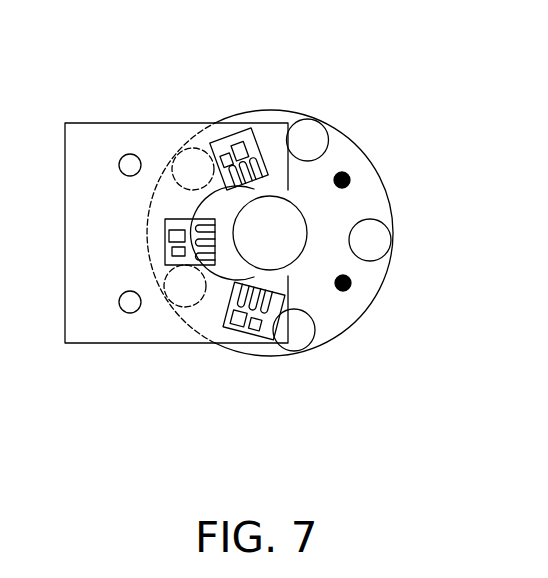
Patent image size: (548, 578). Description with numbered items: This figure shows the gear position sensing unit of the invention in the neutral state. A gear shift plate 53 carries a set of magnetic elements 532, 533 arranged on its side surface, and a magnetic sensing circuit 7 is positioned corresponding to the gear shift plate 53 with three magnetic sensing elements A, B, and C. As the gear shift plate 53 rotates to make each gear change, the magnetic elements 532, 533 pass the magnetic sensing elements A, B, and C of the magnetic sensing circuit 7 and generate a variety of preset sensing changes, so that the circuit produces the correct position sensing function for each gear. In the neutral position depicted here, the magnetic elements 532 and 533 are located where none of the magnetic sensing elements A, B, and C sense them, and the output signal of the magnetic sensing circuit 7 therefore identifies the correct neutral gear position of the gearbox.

The magnetic sensing circuit 7 is at (92, 137).
The gear shift plate 53 is at (342, 145).
The magnetic element 532 is at (349, 176).
The magnetic element 533 is at (350, 282).
The magnetic sensing element A is at (260, 332).
The magnetic sensing element B is at (163, 223).
The magnetic sensing element C is at (247, 138).